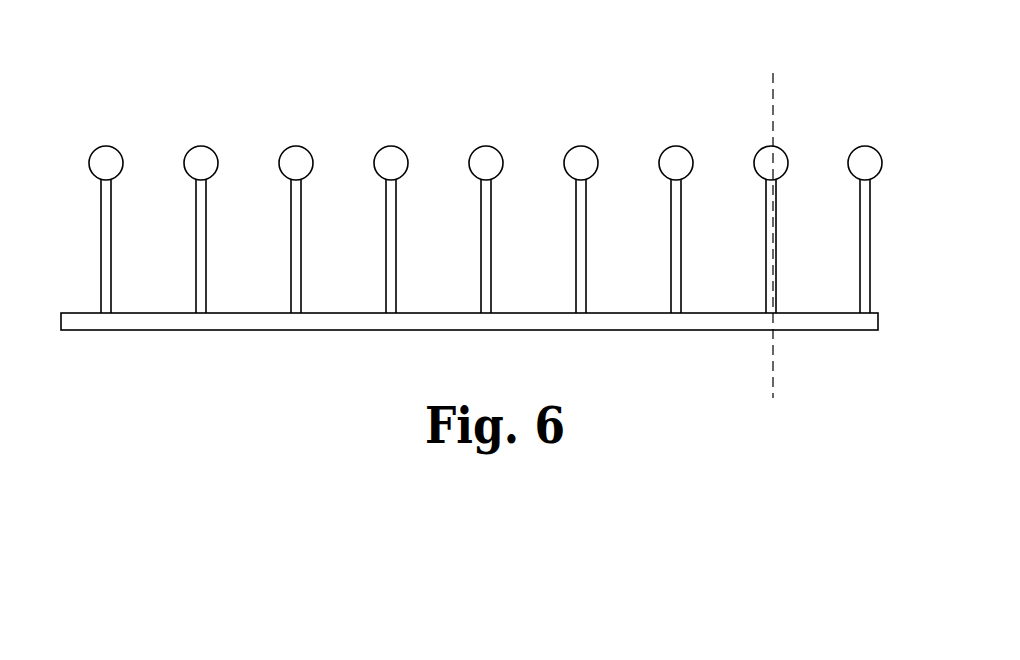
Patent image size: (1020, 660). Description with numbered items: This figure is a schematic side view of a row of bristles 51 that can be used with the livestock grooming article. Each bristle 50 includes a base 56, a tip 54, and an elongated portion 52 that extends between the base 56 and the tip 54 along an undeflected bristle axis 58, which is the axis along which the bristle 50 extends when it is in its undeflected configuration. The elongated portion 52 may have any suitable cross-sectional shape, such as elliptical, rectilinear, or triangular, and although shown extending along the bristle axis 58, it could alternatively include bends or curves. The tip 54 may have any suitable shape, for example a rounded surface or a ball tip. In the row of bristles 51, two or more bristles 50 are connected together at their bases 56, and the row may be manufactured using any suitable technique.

The bristle 50 is at (115, 137).
The row of bristles 51 is at (508, 100).
The elongated portion 52 is at (100, 263).
The tip 54 is at (122, 160).
The base 56 is at (100, 330).
The undeflected bristle axis 58 is at (773, 75).